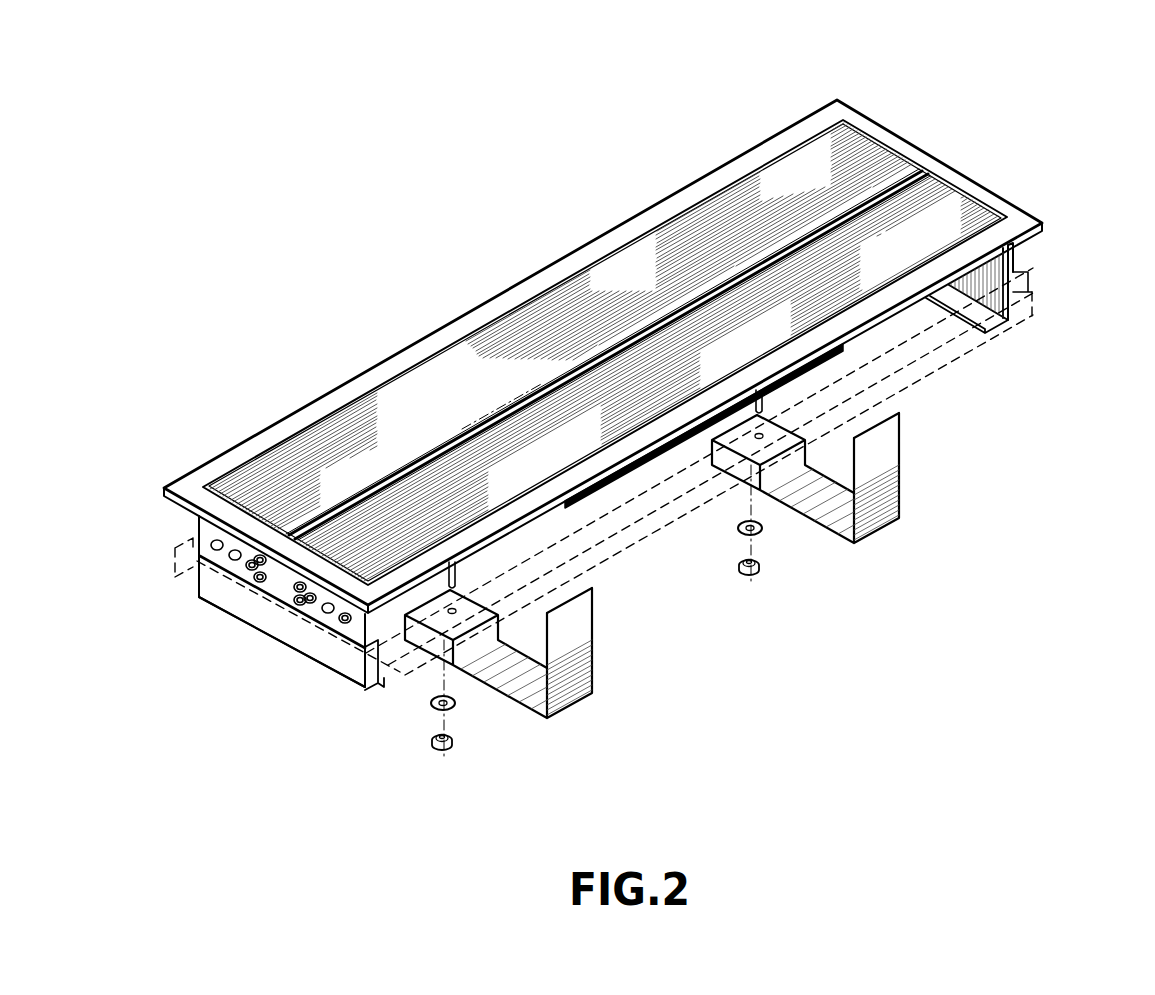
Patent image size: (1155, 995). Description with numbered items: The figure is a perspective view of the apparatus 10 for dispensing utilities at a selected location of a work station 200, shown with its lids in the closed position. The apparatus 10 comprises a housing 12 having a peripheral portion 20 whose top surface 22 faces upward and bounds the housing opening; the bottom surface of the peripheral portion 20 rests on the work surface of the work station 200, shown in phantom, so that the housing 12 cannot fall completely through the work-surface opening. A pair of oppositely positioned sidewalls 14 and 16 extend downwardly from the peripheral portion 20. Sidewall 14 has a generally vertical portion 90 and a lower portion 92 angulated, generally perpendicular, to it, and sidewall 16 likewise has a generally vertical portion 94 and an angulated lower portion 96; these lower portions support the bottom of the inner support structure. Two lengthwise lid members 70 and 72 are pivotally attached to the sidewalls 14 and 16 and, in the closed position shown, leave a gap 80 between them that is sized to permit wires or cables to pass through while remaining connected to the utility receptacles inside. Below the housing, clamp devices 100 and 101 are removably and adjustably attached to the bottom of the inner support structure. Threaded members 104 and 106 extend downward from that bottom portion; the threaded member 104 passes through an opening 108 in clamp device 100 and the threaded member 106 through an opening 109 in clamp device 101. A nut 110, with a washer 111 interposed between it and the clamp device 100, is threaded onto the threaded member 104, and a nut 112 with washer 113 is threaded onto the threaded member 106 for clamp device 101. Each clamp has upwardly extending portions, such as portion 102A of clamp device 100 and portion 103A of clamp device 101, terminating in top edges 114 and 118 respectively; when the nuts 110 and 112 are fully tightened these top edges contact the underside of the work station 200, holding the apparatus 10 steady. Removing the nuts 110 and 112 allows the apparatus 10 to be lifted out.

The apparatus 10 is at (366, 176).
The housing 12 is at (212, 470).
The sidewall 14 is at (270, 624).
The sidewall 16 is at (1017, 252).
The peripheral portion 20 is at (330, 400).
The top surface 22 is at (690, 195).
The lid member 70 is at (935, 200).
The lid member 72 is at (582, 300).
The gap 80 is at (586, 380).
The generally vertical portion 90 is at (337, 655).
The lower portion 92 is at (373, 693).
The generally vertical portion 94 is at (1022, 290).
The lower portion 96 is at (985, 333).
The clamp device 100 is at (565, 705).
The clamp device 101 is at (882, 528).
The upwardly extending portion 102A is at (580, 658).
The upwardly extending portion 103A is at (892, 508).
The threaded member 104 is at (462, 576).
The threaded member 106 is at (764, 411).
The opening 108 is at (452, 615).
The opening 109 is at (766, 442).
The nut 110 is at (452, 757).
The washer 111 is at (458, 708).
The nut 112 is at (750, 580).
The washer 113 is at (738, 532).
The top edge 114 is at (597, 592).
The top edge 118 is at (899, 416).
The work station 200 is at (1012, 318).